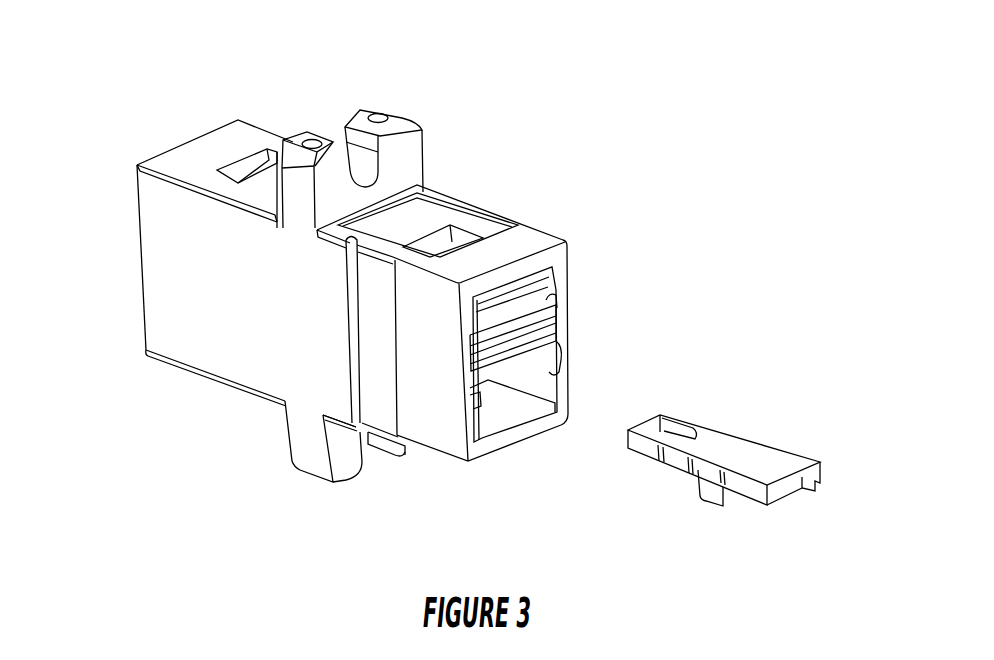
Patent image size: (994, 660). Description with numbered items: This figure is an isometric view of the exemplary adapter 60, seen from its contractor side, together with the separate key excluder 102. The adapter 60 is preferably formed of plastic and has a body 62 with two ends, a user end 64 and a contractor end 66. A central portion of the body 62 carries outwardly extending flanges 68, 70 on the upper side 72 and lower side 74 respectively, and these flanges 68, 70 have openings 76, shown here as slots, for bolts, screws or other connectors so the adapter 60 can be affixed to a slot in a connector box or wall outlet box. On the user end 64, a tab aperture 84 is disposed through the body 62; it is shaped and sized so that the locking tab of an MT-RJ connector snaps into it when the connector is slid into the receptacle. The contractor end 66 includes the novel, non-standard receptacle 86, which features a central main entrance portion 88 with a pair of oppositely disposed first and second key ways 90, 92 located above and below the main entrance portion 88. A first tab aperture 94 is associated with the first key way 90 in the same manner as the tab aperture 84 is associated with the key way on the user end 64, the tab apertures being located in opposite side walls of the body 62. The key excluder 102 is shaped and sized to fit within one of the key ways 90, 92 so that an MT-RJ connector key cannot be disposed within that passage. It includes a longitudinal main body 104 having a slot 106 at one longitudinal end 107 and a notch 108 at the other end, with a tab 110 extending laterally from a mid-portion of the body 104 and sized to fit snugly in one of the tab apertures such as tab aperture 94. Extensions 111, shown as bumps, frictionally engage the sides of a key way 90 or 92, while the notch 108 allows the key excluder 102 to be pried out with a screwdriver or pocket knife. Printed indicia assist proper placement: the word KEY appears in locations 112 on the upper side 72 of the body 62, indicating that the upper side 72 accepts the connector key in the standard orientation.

The adapter 60 is at (387, 90).
The body 62 is at (215, 342).
The user end 64 is at (138, 249).
The contractor end 66 is at (572, 254).
The flange 68 is at (405, 135).
The flange 70 is at (346, 468).
The upper side 72 is at (428, 190).
The lower side 74 is at (250, 395).
The openings 76 is at (333, 132).
The tab aperture 84 is at (225, 150).
The non-standard receptacle 86 is at (552, 327).
The main entrance portion 88 is at (550, 343).
The first key way 90 is at (545, 292).
The second key way 92 is at (523, 381).
The first tab aperture 94 is at (465, 228).
The key excluder 102 is at (745, 436).
The longitudinal main body 104 is at (678, 460).
The slot 106 is at (672, 427).
The longitudinal end 107 is at (635, 440).
The notch 108 is at (822, 480).
The tab 110 is at (727, 497).
The extensions 111 is at (655, 460).
The locations 112 is at (175, 158).